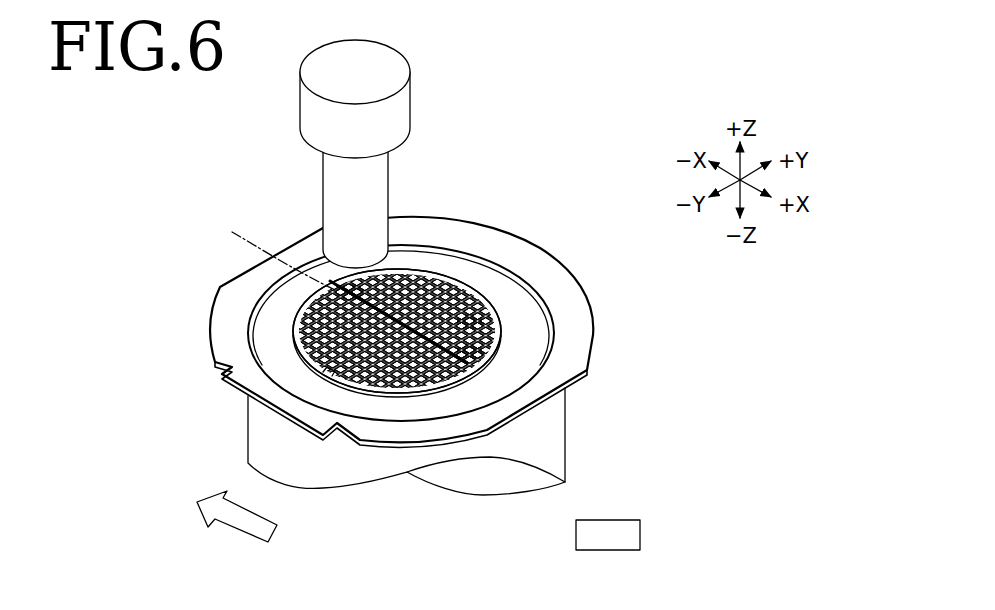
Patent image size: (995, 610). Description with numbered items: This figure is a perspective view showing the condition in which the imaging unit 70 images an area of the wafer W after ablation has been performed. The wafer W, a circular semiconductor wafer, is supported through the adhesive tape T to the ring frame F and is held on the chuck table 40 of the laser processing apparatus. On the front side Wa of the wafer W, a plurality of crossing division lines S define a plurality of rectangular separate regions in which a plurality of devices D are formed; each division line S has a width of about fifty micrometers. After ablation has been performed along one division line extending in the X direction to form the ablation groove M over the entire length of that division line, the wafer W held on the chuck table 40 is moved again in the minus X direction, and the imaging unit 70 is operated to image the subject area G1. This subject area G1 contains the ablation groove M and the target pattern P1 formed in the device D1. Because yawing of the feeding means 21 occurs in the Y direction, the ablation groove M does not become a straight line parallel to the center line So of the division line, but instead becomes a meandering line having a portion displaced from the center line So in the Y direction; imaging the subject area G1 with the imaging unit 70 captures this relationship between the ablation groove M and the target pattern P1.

The imaging unit 70 is at (333, 117).
The ring frame F is at (465, 233).
The adhesive tape T is at (273, 304).
The chuck table 40 is at (550, 430).
The wafer W is at (395, 310).
The front side Wa is at (468, 298).
The devices D is at (300, 316).
The division lines S is at (320, 369).
The center line So is at (477, 323).
The ablation groove M is at (478, 353).
The device D1 is at (342, 284).
The target pattern P1 is at (333, 285).
The subject area G1 is at (265, 254).
The feeding means 21 is at (488, 443).